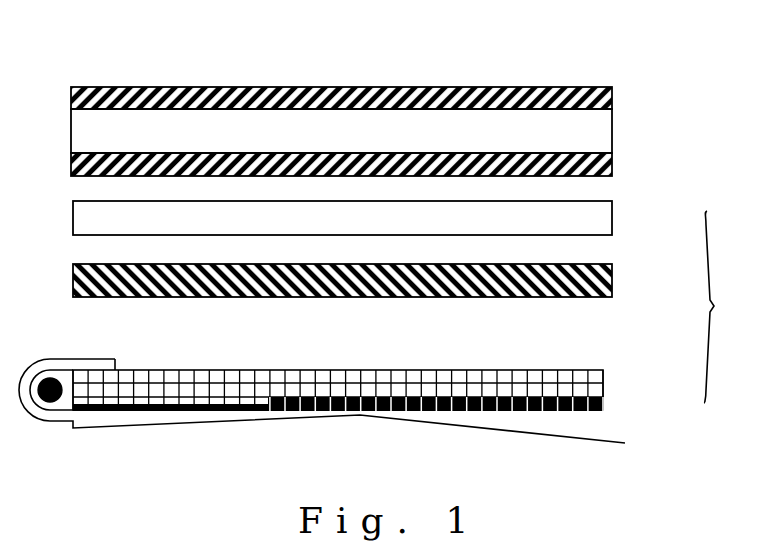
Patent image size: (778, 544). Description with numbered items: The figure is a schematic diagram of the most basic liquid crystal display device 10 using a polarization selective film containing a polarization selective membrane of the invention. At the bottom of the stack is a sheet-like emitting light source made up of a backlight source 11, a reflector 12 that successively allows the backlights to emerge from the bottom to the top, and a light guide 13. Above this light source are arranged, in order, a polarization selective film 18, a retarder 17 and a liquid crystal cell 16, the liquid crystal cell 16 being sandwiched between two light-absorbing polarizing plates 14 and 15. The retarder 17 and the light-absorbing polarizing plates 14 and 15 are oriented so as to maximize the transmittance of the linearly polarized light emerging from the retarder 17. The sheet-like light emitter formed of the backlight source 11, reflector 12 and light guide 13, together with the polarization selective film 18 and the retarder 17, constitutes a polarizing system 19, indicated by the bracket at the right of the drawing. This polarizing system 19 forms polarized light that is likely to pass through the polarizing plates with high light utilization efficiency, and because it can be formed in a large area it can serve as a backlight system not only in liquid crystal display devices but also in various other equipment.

The liquid crystal display device 10 is at (558, 52).
The backlight source 11 is at (50, 402).
The reflector 12 is at (340, 409).
The light guide 13 is at (590, 381).
The light-absorbing polarizing plate 14 is at (612, 166).
The light-absorbing polarizing plate 15 is at (612, 88).
The liquid crystal cell 16 is at (597, 136).
The retarder 17 is at (598, 222).
The polarization selective film 18 is at (612, 283).
The polarizing system 19 is at (730, 307).